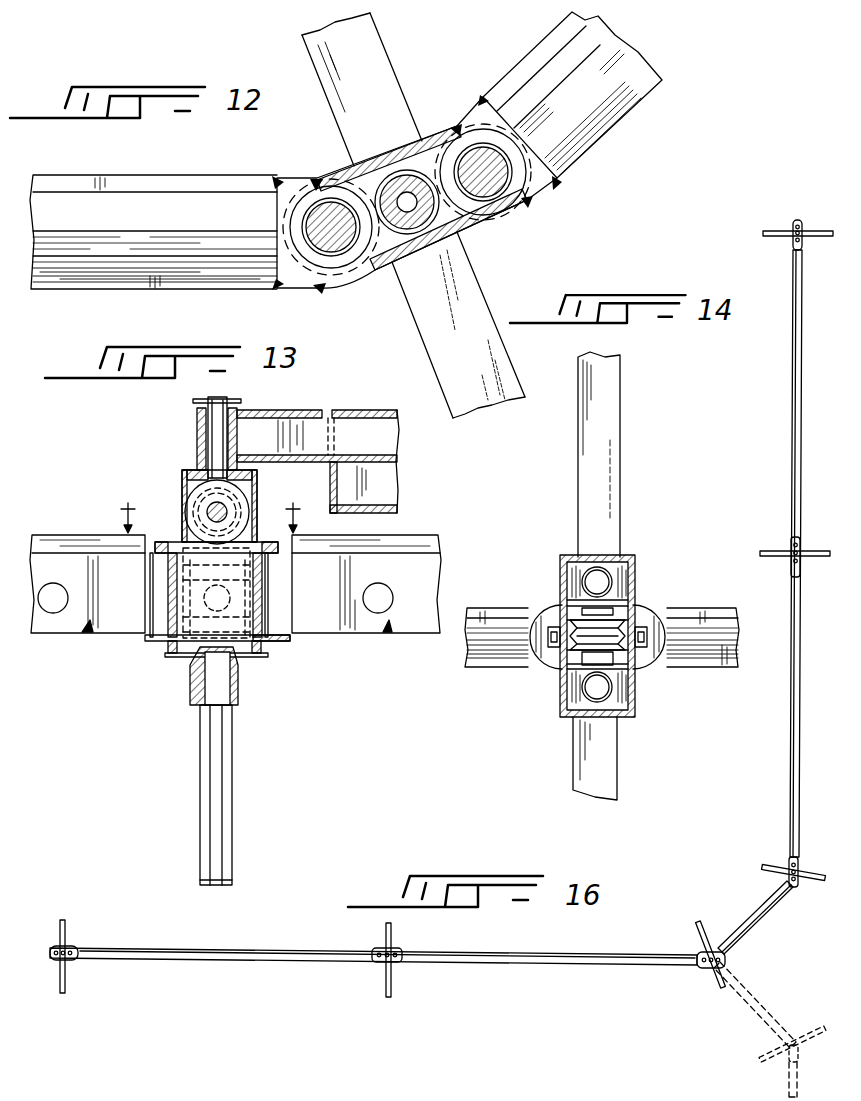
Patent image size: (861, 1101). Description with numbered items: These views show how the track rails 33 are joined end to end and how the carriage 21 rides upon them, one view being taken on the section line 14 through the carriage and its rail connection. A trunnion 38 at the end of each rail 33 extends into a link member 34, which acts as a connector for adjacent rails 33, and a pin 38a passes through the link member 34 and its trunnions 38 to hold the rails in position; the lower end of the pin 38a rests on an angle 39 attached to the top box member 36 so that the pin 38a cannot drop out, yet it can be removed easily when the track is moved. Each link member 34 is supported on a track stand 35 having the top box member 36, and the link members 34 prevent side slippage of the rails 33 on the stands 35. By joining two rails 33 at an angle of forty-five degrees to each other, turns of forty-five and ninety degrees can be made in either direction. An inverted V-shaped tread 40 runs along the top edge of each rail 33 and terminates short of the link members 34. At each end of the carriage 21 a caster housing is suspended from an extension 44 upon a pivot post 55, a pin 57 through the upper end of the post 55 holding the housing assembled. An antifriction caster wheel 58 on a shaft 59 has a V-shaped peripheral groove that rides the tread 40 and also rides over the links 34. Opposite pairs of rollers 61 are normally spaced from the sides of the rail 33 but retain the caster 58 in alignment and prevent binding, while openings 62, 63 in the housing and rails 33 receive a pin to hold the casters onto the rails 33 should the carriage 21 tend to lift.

In FIG. 13, the section line 14— 14 is at (204, 508).
In FIG. 13, the carriage 21 is at (383, 388).
In FIG. 12, the rail 33 is at (247, 291).
In FIG. 13, the rail 33 is at (58, 637).
In FIG. 14, the rail 33 is at (493, 608).
In FIG. 16, the rail 33 is at (285, 963).
In FIG. 12, the link member 34 is at (383, 154).
In FIG. 16, the link member 34 is at (68, 962).
In FIG. 16, the track stand 35 is at (66, 933).
In FIG. 12, the top box member 36 is at (477, 303).
In FIG. 14, the top box member 36 is at (615, 455).
In FIG. 12, the trunnion 38 is at (470, 127).
In FIG. 14, the trunnion 38 is at (550, 653).
In FIG. 12, the pin 38a is at (500, 207).
In FIG. 13, the pin 38a is at (277, 648).
In FIG. 14, the pin 38a is at (560, 603).
In FIG. 13, the angle 39 is at (248, 668).
In FIG. 12, the inverted V-shaped tread 40 is at (230, 232).
In FIG. 13, the inverted V-shaped tread 40 is at (70, 534).
In FIG. 14, the inverted V-shaped tread 40 is at (725, 640).
In FIG. 13, the extension 44 is at (287, 410).
In FIG. 13, the pivot post 55 is at (212, 400).
In FIG. 13, the pin 57 is at (238, 406).
In FIG. 13, the antifriction caster wheel 58 is at (193, 500).
In FIG. 14, the antifriction caster wheel 58 is at (562, 698).
In FIG. 14, the shaft 59 is at (618, 617).
In FIG. 13, the roller 61 is at (193, 627).
In FIG. 14, the roller 61 is at (597, 557).
In FIG. 13, the opening 62 is at (60, 605).
In FIG. 13, the opening 63 is at (230, 598).